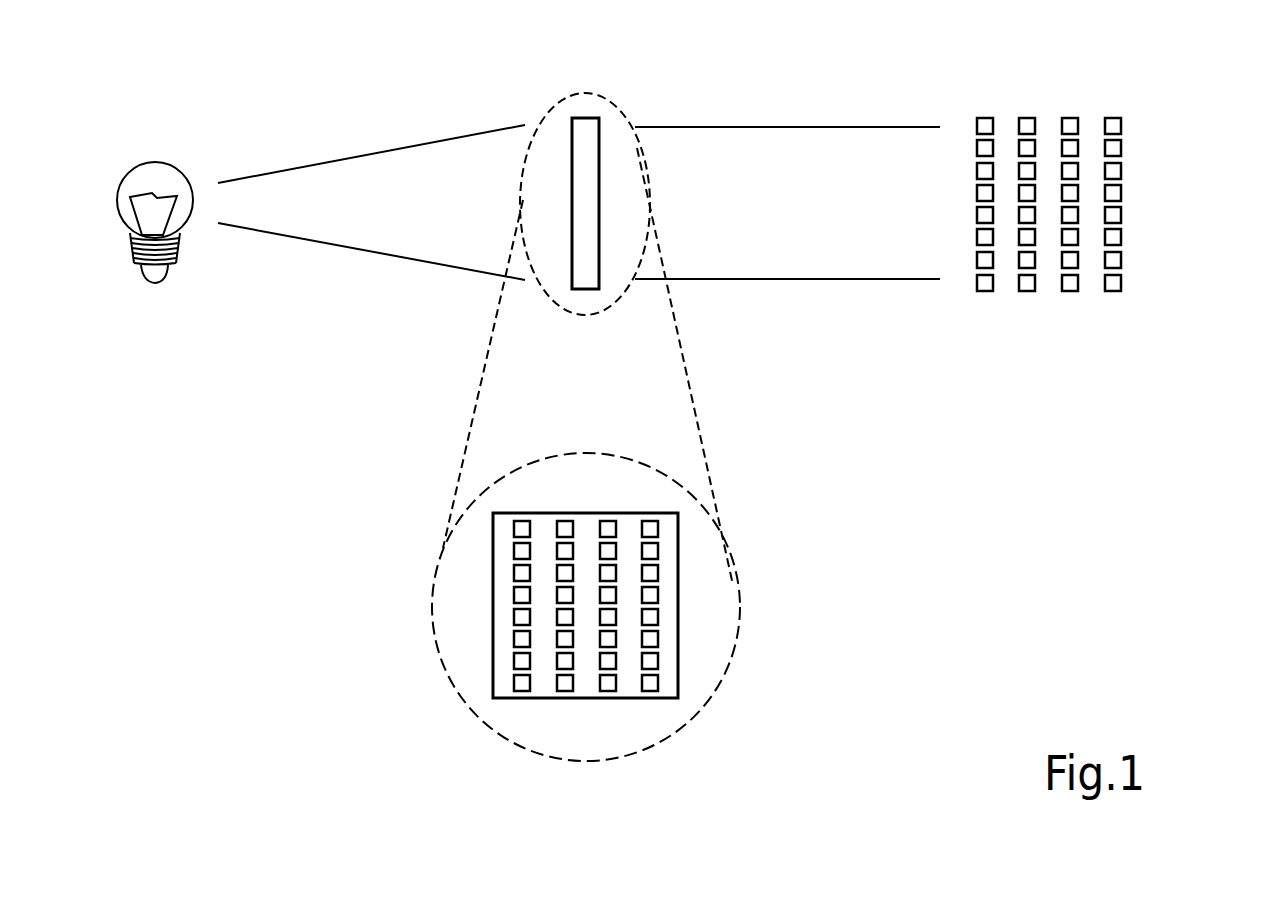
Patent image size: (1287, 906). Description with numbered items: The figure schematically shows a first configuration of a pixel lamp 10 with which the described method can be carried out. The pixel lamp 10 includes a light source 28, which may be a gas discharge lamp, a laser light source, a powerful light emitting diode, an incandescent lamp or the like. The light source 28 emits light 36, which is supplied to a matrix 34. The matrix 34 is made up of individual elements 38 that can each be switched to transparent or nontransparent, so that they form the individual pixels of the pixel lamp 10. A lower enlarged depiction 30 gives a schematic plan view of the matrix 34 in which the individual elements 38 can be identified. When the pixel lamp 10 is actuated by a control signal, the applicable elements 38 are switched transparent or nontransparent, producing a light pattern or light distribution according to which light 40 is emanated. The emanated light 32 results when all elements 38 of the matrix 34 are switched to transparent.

The pixel lamp 10 is at (1117, 95).
The light source 28 is at (153, 160).
The lower enlarged depiction 30 is at (635, 145).
The emanated light 32 is at (1115, 193).
The matrix 34 is at (583, 118).
The light 36 is at (375, 173).
The individual elements 38 is at (522, 685).
The light 40 is at (865, 270).